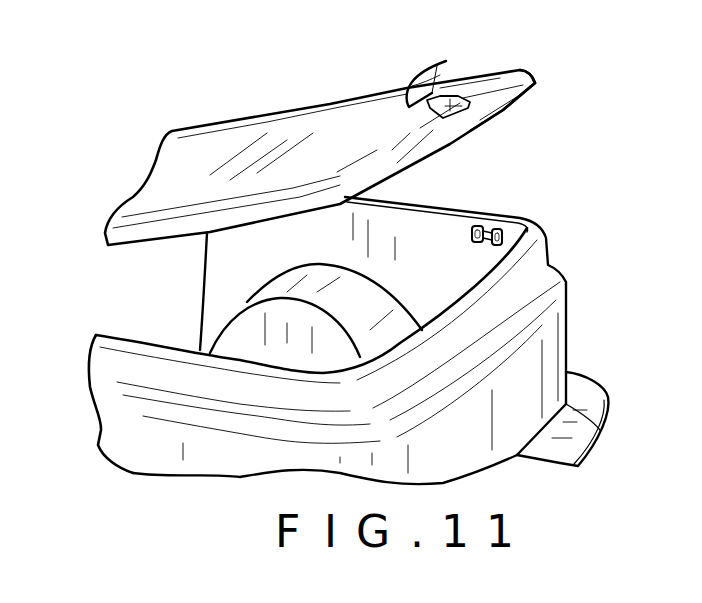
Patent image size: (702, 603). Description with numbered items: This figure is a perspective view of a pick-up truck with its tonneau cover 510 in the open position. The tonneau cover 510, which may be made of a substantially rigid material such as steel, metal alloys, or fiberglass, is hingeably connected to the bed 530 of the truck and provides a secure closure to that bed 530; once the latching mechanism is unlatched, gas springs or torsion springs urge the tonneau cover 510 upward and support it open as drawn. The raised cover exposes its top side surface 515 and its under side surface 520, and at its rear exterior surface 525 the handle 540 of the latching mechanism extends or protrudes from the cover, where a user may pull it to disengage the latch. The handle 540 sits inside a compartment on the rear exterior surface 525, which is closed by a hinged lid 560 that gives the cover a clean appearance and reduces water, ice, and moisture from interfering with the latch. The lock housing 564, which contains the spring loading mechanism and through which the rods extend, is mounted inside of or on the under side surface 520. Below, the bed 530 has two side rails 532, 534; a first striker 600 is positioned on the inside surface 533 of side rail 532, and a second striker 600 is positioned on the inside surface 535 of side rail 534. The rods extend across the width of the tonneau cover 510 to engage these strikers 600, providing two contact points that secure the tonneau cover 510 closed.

The tonneau cover 510 is at (327, 127).
The top side surface 515 is at (280, 135).
The under side surface 520 is at (143, 257).
The rear exterior surface 525 is at (523, 72).
The bed 530 is at (123, 404).
The side rail 532 is at (248, 430).
The inside surface 533 is at (163, 322).
The side rail 534 is at (433, 224).
The inside surface 535 is at (388, 222).
The handle 540 is at (445, 96).
The hinged lid 560 is at (426, 70).
The lock housing 564 is at (470, 110).
The striker 600 is at (505, 222).